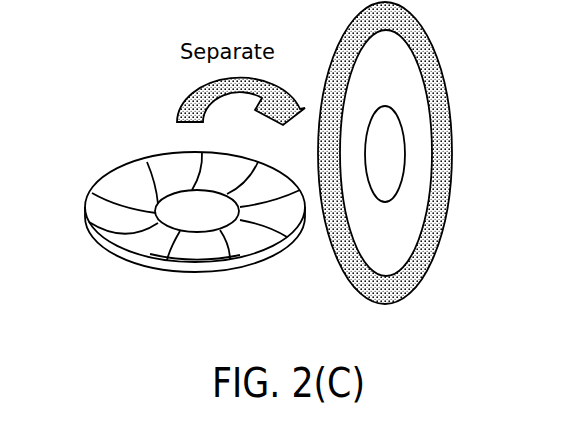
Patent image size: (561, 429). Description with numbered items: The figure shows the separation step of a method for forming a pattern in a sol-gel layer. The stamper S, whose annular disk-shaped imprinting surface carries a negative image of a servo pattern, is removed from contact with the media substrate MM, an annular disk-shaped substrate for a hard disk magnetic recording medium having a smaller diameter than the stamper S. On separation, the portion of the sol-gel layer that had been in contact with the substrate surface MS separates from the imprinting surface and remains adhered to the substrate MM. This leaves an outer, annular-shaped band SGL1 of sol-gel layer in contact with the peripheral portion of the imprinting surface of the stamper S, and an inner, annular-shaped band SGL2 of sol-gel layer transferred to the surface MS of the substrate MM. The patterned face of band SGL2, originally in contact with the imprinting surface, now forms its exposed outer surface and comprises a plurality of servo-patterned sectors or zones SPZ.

The stamper S is at (423, 162).
The outer annular-shaped band of sol-gel layer SGL1 is at (425, 283).
The inner annular-shaped band of sol-gel layer SGL2 is at (135, 243).
The servo-patterned sectors or zones SPZ is at (167, 165).
The surface of substrate MS is at (178, 263).
The substrate MM is at (218, 273).